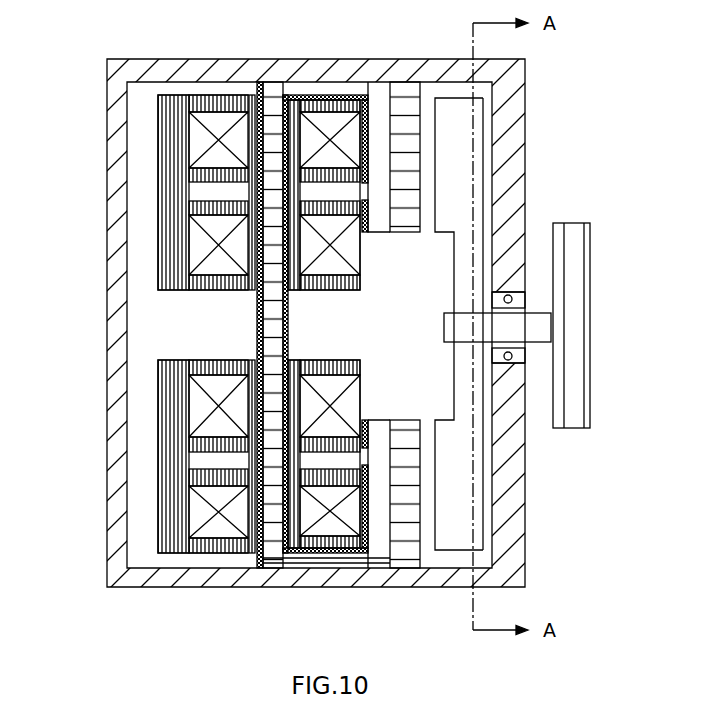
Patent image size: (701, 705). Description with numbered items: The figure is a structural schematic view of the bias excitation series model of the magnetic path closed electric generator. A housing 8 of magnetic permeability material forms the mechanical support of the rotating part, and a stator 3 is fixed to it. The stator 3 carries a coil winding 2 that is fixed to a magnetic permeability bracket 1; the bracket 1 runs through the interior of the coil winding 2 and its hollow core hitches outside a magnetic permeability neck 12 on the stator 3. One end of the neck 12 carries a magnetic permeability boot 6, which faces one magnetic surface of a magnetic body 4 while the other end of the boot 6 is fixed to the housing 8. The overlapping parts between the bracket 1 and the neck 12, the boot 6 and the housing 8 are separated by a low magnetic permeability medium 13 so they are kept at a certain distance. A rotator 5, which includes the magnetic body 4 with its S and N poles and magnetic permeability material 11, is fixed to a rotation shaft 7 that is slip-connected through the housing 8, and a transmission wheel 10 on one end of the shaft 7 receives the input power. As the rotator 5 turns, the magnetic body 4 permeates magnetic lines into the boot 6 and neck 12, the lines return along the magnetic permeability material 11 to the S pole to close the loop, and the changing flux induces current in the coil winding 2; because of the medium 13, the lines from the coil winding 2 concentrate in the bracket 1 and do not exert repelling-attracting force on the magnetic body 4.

The magnetic permeability bracket 1 is at (168, 453).
The coil winding 2 is at (198, 512).
The stator 3 is at (157, 250).
The magnetic body 4 is at (462, 540).
The rotator 5 is at (482, 437).
The magnetic permeability boot 6 is at (405, 492).
The rotation shaft 7 is at (528, 328).
The housing 8 is at (333, 562).
The transmission wheel 10 is at (578, 383).
The magnetic permeability material 11 is at (268, 345).
The magnetic permeability neck 12 is at (272, 527).
The low magnetic permeability medium 13 is at (258, 185).